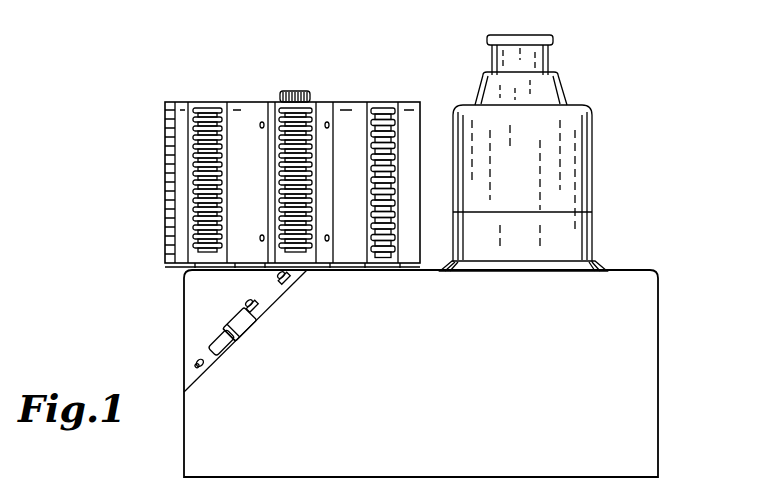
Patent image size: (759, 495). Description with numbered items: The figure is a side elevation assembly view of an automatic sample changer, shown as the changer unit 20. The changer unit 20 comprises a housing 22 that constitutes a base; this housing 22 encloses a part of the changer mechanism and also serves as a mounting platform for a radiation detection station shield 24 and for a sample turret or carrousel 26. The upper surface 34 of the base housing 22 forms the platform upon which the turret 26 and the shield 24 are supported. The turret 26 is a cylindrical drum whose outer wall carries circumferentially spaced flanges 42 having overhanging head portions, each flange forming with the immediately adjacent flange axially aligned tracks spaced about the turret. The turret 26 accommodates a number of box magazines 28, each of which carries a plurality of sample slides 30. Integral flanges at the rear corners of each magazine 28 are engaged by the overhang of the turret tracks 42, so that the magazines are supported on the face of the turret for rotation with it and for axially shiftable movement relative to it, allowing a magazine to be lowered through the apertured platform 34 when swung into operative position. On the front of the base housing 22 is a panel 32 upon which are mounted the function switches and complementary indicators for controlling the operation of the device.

The changer unit 20 is at (668, 340).
The housing 22 is at (640, 384).
The radiation detection station shield 24 is at (600, 134).
The sample turret 26 is at (328, 100).
The box magazine 28 is at (194, 98).
The sample slide 30 is at (193, 203).
The panel 32 is at (249, 326).
The upper surface 34 is at (636, 272).
The flange 42 is at (258, 178).